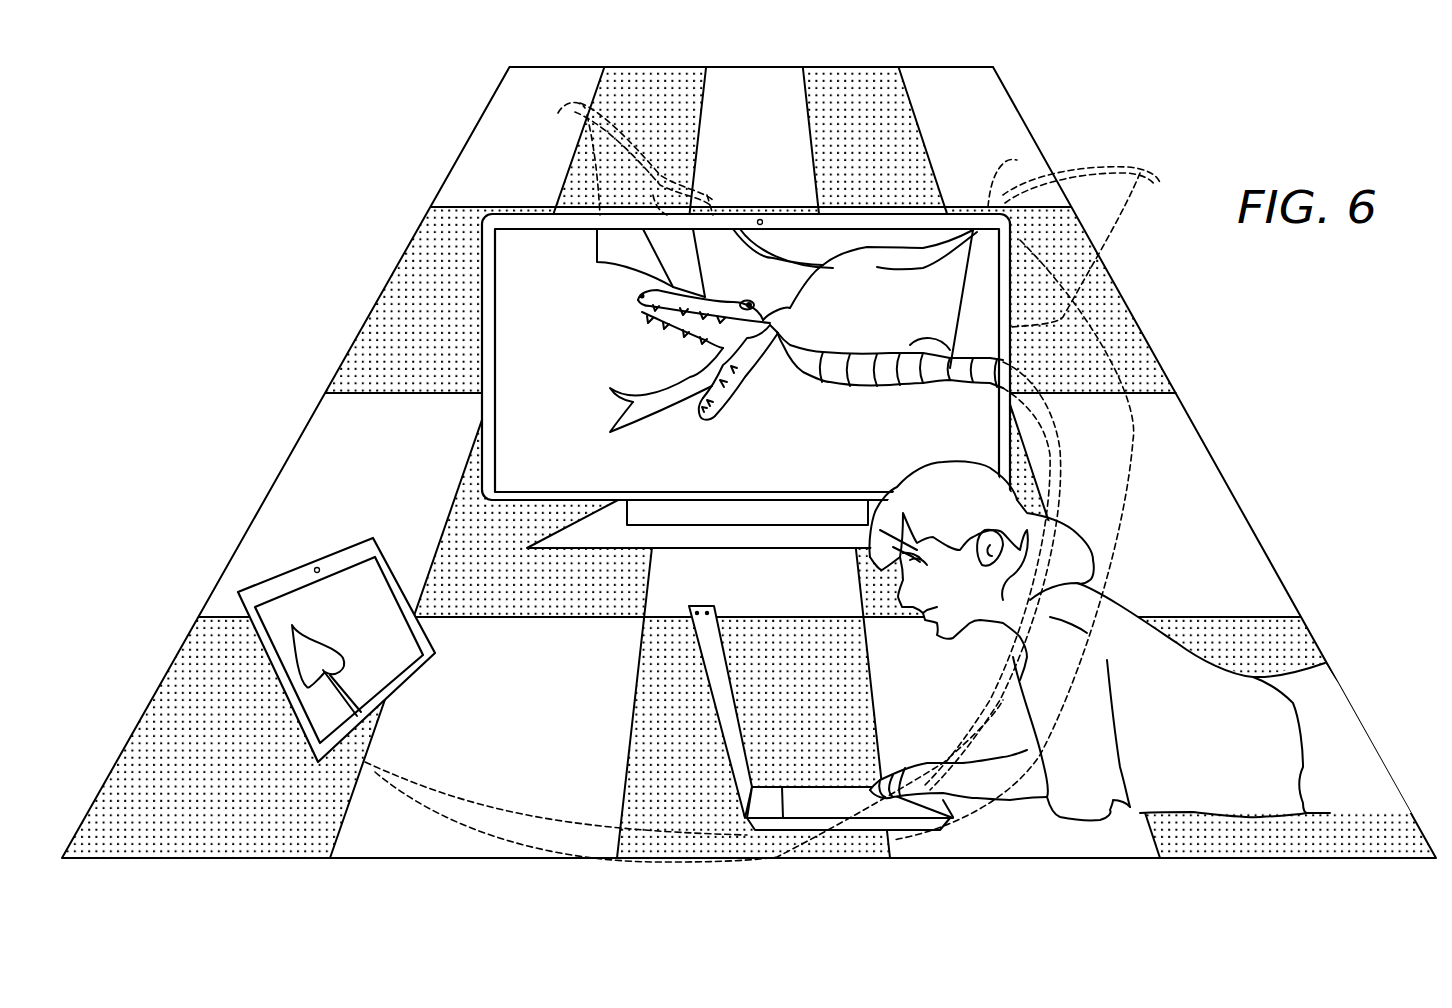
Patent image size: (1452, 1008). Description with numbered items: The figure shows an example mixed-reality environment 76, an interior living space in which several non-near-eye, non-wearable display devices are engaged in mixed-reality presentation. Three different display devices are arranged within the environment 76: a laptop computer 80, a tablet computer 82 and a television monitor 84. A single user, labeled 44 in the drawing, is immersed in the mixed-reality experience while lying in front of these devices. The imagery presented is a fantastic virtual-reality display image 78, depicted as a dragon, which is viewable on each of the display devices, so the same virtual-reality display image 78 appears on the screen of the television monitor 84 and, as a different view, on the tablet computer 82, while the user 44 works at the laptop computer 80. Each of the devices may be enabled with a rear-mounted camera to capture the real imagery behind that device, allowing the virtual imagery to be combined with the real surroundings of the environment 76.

The MR environment 76 is at (220, 163).
The virtual-reality display image 78 is at (338, 645).
The laptop computer 80 is at (727, 685).
The tablet computer 82 is at (427, 637).
The television monitor 84 is at (481, 408).
The user 44 is at (1226, 735).